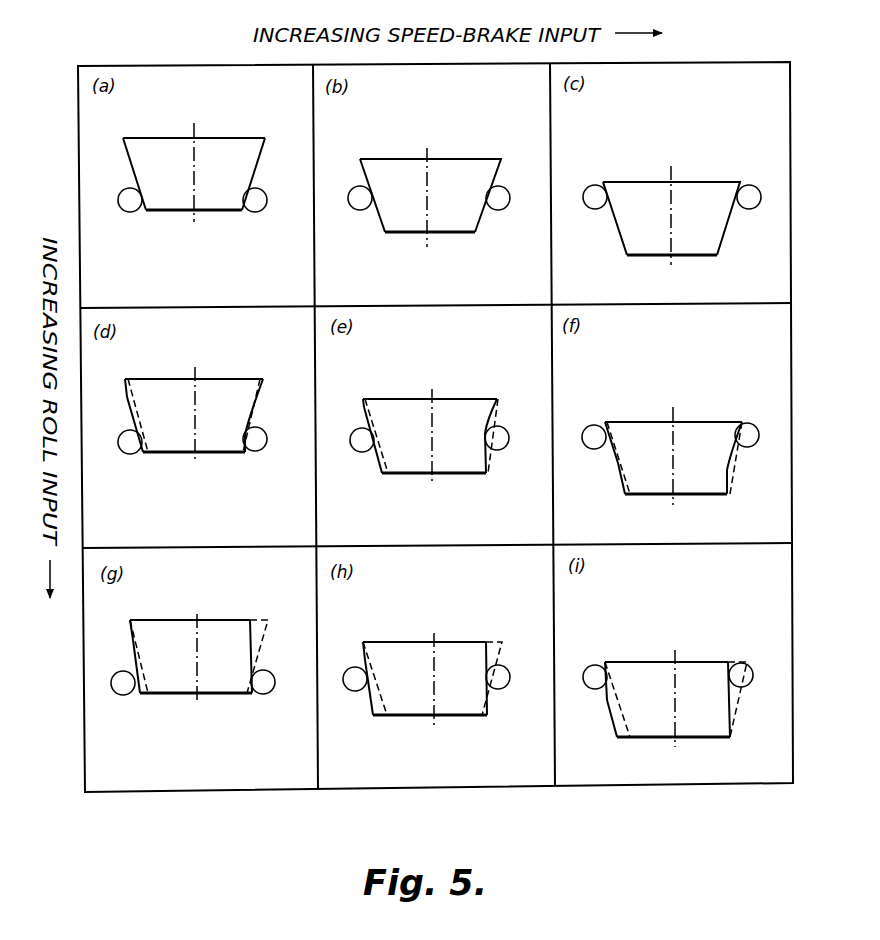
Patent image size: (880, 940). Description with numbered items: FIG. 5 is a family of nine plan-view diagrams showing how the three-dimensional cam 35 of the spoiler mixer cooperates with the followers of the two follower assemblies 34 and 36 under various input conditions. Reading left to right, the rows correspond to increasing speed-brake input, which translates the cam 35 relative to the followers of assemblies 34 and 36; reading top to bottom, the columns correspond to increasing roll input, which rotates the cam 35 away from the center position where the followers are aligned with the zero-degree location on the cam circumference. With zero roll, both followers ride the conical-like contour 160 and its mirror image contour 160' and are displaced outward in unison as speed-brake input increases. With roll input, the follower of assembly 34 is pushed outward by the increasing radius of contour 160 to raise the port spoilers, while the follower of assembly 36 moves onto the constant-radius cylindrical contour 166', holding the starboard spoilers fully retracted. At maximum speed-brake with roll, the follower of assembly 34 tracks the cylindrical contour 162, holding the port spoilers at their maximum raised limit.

The follower assembly 34 is at (352, 439).
The three-dimensional cam 35 is at (435, 426).
The follower assembly 36 is at (512, 453).
The contour 160 is at (356, 450).
The contour 160' is at (511, 304).
The contour 162 is at (356, 534).
The cylindrical contour 166' is at (510, 590).